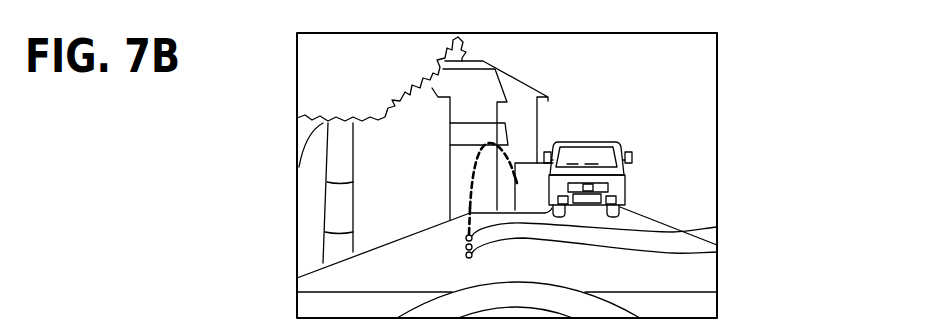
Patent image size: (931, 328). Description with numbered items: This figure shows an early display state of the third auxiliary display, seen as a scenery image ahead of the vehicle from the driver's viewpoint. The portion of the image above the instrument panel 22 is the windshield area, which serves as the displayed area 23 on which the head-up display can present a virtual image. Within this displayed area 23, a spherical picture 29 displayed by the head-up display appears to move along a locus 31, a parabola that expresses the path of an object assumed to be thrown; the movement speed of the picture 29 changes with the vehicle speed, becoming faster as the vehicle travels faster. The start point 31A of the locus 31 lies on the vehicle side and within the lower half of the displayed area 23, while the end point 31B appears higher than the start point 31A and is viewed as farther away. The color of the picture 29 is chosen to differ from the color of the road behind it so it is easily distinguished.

The instrument panel 22 is at (308, 300).
The displayed area 23 is at (283, 35).
The spherical picture 29 is at (717, 227).
The locus 31 is at (480, 146).
The start point 31A is at (717, 252).
The end point 31B is at (517, 183).